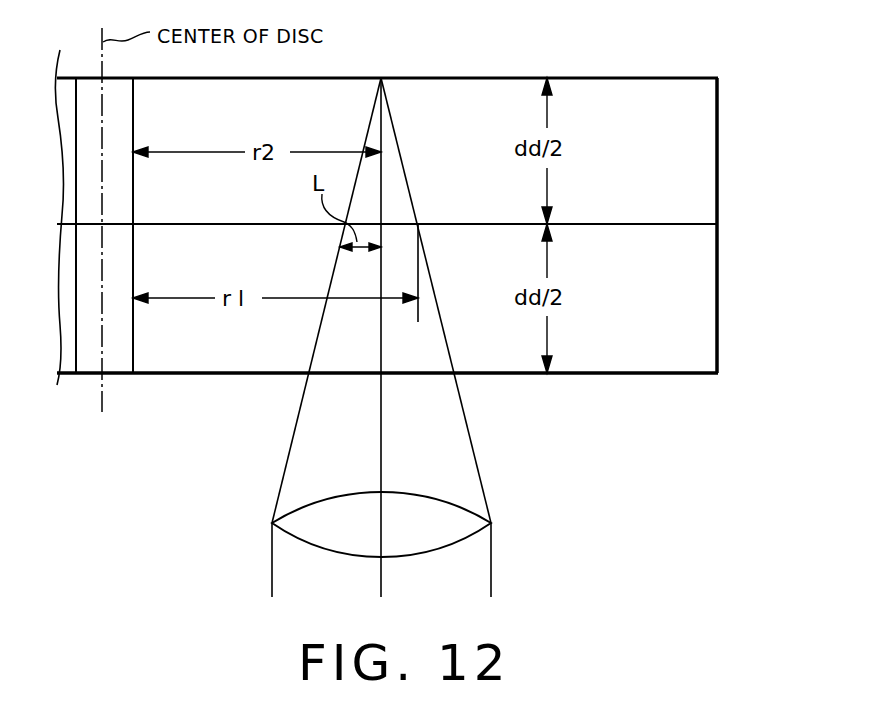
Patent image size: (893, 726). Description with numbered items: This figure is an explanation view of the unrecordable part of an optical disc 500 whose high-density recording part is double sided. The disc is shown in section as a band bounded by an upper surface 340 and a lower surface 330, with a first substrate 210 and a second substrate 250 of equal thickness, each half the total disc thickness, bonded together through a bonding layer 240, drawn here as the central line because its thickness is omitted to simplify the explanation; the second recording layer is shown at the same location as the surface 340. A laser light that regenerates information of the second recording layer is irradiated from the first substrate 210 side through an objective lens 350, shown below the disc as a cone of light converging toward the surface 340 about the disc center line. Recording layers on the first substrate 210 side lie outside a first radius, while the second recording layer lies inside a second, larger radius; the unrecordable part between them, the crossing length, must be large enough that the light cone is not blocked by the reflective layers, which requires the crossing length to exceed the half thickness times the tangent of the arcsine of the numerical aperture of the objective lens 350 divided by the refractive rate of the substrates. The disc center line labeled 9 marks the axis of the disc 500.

The optical disc 9 is at (115, 365).
The surface 340 is at (626, 77).
The second substrate 250 is at (700, 151).
The bonding layer 240 is at (696, 224).
The first substrate 210 is at (700, 300).
The surface 330 is at (217, 375).
The objective lens 350 is at (457, 505).
The optical disc 500 is at (639, 451).